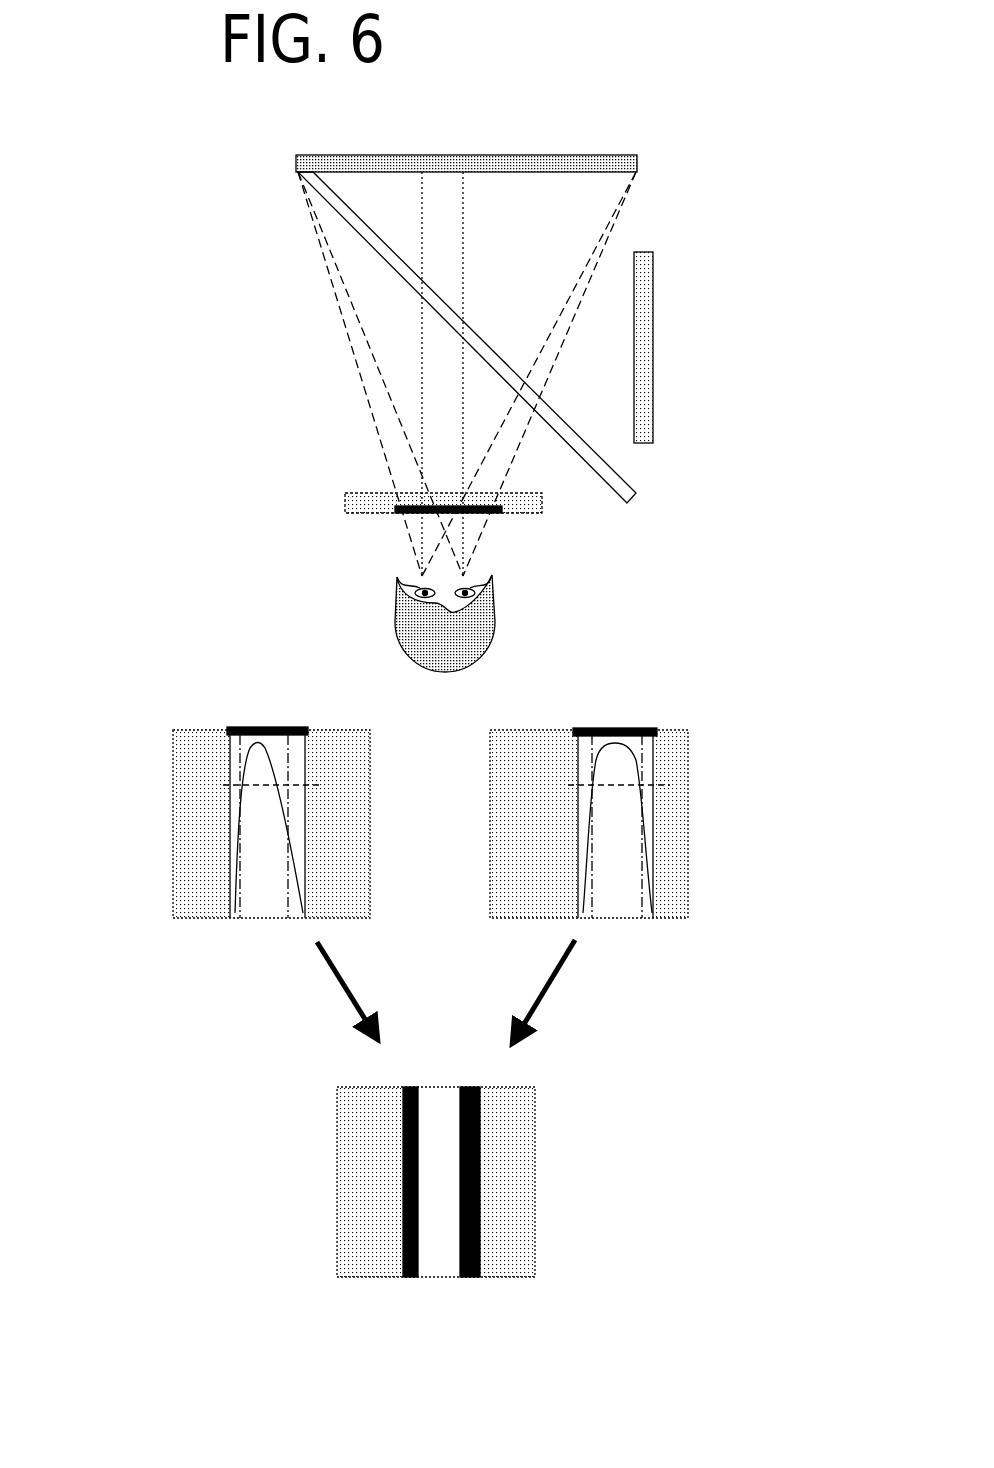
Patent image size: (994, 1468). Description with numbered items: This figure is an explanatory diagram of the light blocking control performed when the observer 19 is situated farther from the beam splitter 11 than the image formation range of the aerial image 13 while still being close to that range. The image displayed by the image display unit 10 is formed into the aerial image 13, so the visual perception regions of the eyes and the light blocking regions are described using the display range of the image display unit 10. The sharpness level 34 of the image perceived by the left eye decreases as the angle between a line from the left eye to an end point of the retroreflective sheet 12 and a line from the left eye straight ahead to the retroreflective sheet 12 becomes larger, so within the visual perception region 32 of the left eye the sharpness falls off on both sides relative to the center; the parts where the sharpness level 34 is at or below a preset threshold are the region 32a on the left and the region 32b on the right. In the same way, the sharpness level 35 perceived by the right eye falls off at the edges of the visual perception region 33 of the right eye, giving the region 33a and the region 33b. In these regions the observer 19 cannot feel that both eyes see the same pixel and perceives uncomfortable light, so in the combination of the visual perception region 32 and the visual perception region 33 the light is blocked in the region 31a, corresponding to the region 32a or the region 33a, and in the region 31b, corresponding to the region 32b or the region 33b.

The image display unit 10 is at (653, 330).
The beam splitter 11 is at (418, 290).
The retroreflective sheet 12 is at (393, 155).
The aerial image 13 is at (546, 494).
The observer 19 is at (397, 598).
The region 31a is at (403, 1277).
The region 31b is at (472, 1277).
The visual perception region of the left eye 32 is at (277, 890).
The region 32a is at (233, 882).
The region 32b is at (300, 765).
The visual perception region of the right eye 33 is at (618, 885).
The region 33a is at (578, 908).
The region 33b is at (643, 837).
The sharpness level 34 is at (230, 737).
The sharpness level 35 is at (607, 743).